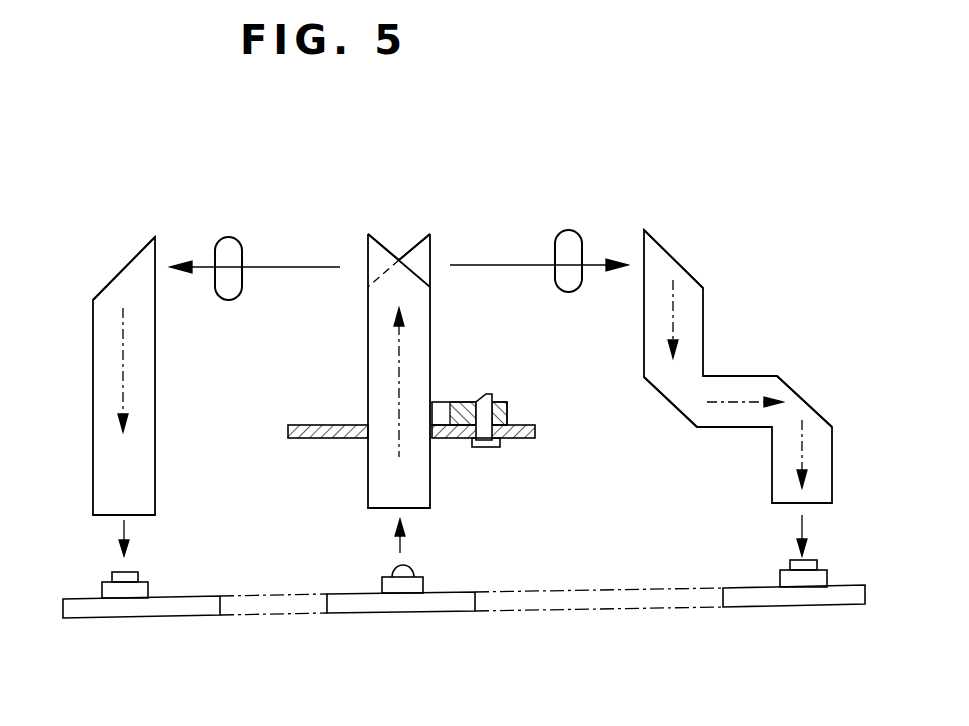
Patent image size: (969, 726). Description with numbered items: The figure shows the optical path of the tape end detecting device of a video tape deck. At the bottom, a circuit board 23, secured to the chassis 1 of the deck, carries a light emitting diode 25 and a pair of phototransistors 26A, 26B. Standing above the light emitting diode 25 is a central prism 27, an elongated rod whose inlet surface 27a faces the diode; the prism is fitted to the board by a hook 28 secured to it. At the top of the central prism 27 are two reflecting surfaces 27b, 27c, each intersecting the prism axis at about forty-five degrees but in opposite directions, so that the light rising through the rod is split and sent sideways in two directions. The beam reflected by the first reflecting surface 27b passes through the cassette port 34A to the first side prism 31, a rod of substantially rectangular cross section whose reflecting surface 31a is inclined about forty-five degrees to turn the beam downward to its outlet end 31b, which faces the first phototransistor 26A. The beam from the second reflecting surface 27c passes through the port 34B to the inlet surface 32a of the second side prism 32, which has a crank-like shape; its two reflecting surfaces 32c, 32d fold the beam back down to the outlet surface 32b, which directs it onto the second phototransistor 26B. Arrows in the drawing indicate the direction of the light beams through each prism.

The chassis 1 is at (305, 438).
The circuit board 23 is at (185, 598).
The light emitting diode 25 is at (405, 572).
The first phototransistor 26A is at (128, 573).
The second phototransistor 26B is at (795, 560).
The central prism 27 is at (375, 355).
The inlet surface 27a is at (378, 510).
The first reflecting surface 27b is at (380, 240).
The second reflecting surface 27c is at (412, 240).
The hook 28 is at (478, 396).
The first side prism 31 is at (153, 365).
The reflecting surface 31a is at (130, 264).
The outlet end 31b is at (107, 517).
The second side prism 32 is at (650, 362).
The inlet surface 32a is at (683, 266).
The outlet surface 32b is at (812, 505).
The first reflecting surface of second side prism 32c is at (666, 396).
The second reflecting surface of second side prism 32d is at (799, 396).
The cassette port 34A is at (242, 252).
The cassette port 34B is at (556, 246).